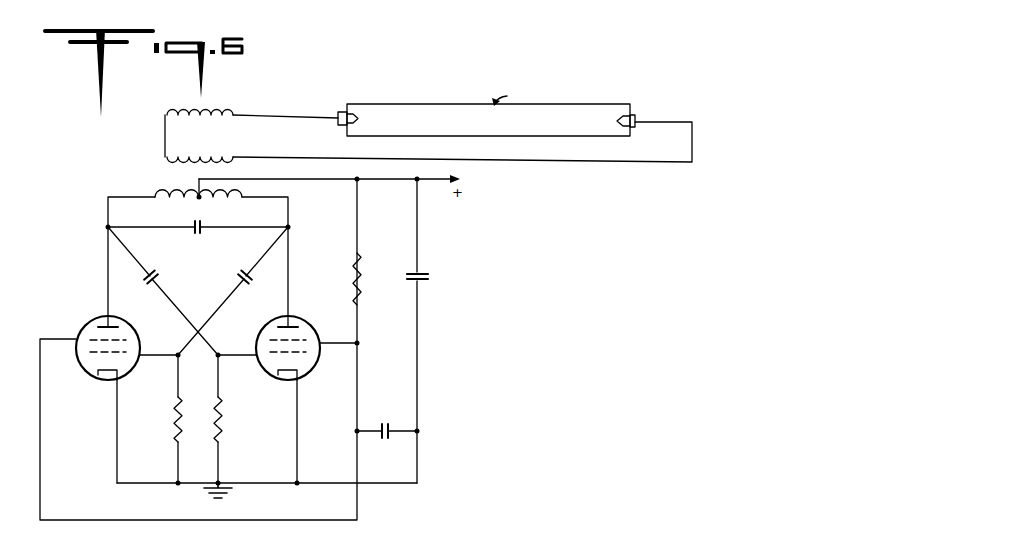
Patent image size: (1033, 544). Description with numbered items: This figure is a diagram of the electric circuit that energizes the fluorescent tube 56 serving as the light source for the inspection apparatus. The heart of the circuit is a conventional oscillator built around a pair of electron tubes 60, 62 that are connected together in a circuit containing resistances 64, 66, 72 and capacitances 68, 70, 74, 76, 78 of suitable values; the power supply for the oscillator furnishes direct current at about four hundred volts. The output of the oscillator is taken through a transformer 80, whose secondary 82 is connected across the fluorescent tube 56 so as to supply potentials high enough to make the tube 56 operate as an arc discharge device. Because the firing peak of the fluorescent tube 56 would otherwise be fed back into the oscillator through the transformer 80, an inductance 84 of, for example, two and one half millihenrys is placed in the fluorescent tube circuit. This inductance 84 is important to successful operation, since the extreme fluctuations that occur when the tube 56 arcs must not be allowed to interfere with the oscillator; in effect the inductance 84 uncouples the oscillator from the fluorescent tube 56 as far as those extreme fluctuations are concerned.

The fluorescent tube 56 is at (401, 104).
The electron tube 60 is at (90, 322).
The electron tube 62 is at (308, 322).
The resistance 64 is at (174, 430).
The resistance 66 is at (222, 430).
The capacitance 68 is at (157, 277).
The capacitance 70 is at (238, 278).
The resistance 72 is at (362, 295).
The capacitance 74 is at (194, 221).
The capacitance 76 is at (389, 427).
The capacitance 78 is at (424, 282).
The transformer 80 is at (182, 179).
The secondary 82 is at (215, 157).
The inductance 84 is at (226, 110).